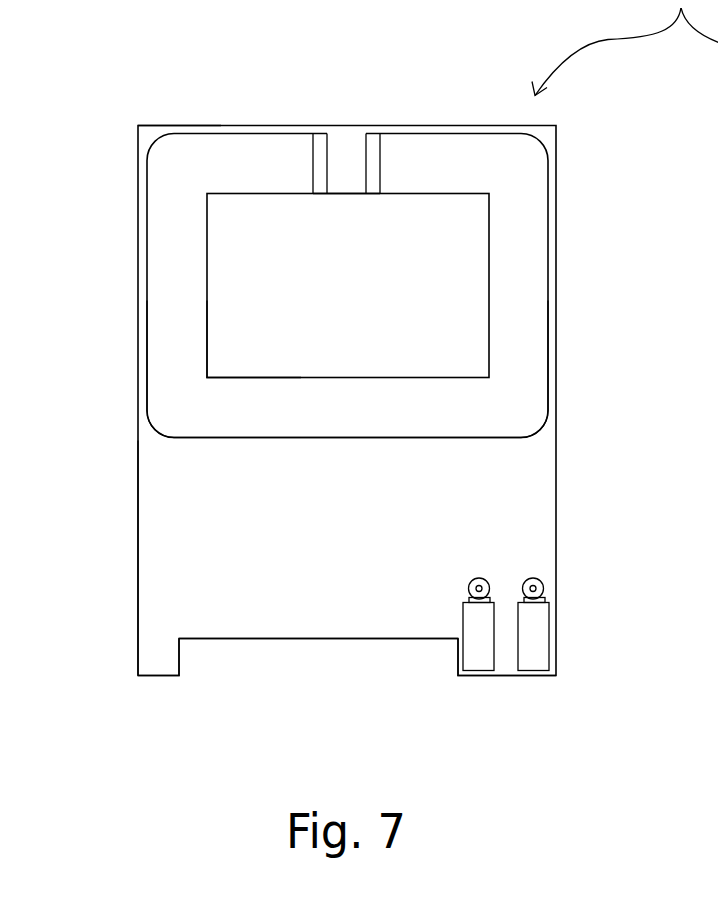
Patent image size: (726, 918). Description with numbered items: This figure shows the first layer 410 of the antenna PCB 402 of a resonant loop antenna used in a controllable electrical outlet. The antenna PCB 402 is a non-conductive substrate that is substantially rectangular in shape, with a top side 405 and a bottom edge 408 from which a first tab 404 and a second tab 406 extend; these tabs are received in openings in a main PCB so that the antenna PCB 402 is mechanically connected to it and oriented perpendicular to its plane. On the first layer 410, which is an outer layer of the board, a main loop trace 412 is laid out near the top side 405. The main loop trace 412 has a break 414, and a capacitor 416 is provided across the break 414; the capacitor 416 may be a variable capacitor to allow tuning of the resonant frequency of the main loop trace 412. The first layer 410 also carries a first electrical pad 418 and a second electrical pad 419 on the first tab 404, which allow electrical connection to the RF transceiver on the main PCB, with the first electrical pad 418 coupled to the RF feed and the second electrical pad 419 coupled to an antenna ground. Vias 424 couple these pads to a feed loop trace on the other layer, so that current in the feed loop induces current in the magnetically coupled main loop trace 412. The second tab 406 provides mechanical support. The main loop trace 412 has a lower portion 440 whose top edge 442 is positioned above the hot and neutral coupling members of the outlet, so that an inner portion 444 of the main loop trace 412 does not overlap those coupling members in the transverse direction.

The antenna PCB 402 is at (545, 482).
The first tab 404 is at (502, 675).
The top side 405 is at (173, 125).
The second tab 406 is at (157, 675).
The bottom edge 408 is at (277, 638).
The first layer 410 is at (326, 531).
The main loop trace 412 is at (512, 313).
The break 414 is at (352, 121).
The capacitor 416 is at (355, 147).
The first electrical pad 418 is at (481, 651).
The second electrical pad 419 is at (533, 651).
The vias 424 is at (482, 578).
The lower portion 440 is at (316, 420).
The top edge 442 is at (260, 377).
The inner portion 444 is at (316, 305).